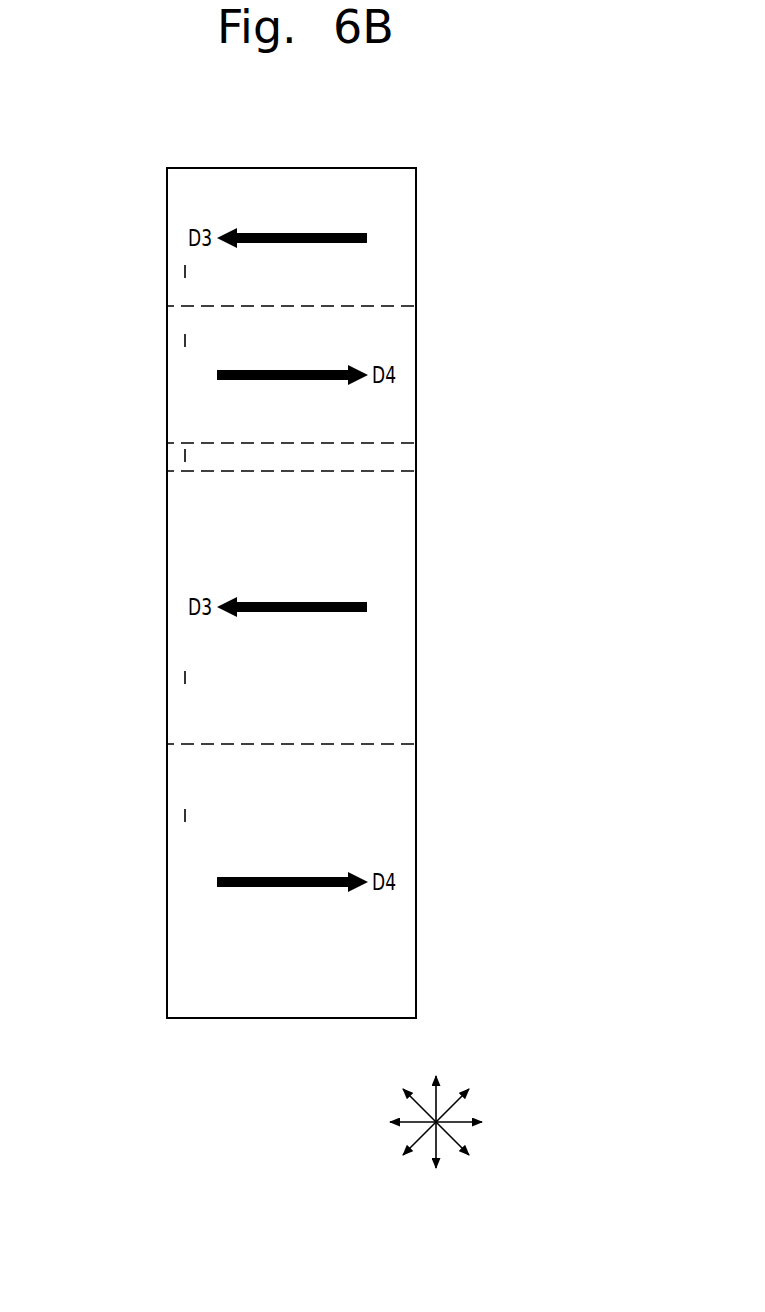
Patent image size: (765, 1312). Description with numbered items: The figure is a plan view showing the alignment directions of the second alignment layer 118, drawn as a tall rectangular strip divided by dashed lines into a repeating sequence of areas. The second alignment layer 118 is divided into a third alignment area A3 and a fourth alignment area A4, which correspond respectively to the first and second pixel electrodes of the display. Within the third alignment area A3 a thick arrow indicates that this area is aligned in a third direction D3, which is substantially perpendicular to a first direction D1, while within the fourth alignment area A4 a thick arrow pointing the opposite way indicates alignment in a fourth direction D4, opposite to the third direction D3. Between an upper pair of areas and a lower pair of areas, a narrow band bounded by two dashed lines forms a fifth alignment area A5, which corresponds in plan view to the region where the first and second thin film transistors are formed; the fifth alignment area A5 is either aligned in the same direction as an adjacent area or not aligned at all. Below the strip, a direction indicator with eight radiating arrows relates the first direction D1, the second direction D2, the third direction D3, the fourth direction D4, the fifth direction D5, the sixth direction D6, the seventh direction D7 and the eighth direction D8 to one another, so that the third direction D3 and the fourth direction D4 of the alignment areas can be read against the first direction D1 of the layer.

The second alignment layer 118 is at (416, 400).
The third alignment area A3 is at (185, 271).
The fourth alignment area A4 is at (185, 339).
The fifth alignment area A5 is at (185, 454).
The first direction D1 is at (436, 1085).
The second direction D2 is at (436, 1159).
The third direction D3 is at (398, 1122).
The fourth direction D4 is at (473, 1122).
The fifth direction D5 is at (407, 1151).
The sixth direction D6 is at (465, 1151).
The seventh direction D7 is at (407, 1093).
The eighth direction D8 is at (465, 1093).